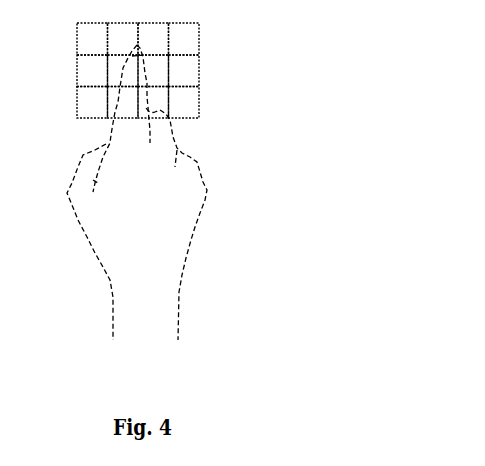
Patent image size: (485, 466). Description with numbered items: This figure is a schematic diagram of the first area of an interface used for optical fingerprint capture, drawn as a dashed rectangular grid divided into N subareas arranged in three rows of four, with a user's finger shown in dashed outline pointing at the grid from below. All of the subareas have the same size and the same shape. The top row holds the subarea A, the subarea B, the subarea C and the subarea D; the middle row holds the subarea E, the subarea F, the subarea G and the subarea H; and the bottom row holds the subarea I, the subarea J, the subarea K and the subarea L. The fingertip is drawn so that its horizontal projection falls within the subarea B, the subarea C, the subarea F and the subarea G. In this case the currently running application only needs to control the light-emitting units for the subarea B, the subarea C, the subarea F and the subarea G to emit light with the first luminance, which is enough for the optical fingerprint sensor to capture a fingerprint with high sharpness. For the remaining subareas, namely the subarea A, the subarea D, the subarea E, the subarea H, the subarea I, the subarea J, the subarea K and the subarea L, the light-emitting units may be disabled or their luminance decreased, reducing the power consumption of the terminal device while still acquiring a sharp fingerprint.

The subarea A is at (92, 39).
The subarea B is at (123, 39).
The subarea C is at (153, 39).
The subarea D is at (184, 39).
The subarea E is at (92, 71).
The subarea F is at (123, 71).
The subarea G is at (153, 71).
The subarea H is at (184, 71).
The subarea I is at (92, 103).
The subarea J is at (123, 103).
The subarea K is at (153, 103).
The subarea L is at (184, 103).